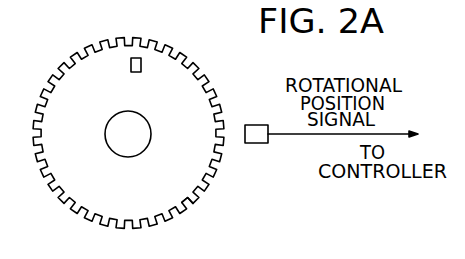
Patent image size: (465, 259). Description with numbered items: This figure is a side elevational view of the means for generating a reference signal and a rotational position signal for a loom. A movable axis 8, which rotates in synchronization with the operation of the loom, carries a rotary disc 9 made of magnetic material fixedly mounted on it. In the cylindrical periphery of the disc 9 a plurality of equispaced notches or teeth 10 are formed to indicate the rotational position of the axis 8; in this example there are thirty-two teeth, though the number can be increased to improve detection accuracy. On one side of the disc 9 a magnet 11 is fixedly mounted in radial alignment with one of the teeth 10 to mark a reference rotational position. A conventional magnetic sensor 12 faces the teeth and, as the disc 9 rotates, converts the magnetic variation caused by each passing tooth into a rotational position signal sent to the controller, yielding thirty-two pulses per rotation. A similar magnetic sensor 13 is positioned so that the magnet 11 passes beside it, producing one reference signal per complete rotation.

The movable axis 8 is at (150, 127).
The rotary disc 9 is at (170, 194).
The notches or teeth 10 is at (150, 43).
The magnet 11 is at (108, 82).
The magnetic sensor 12 is at (261, 143).
The magnetic sensor 13 is at (131, 67).